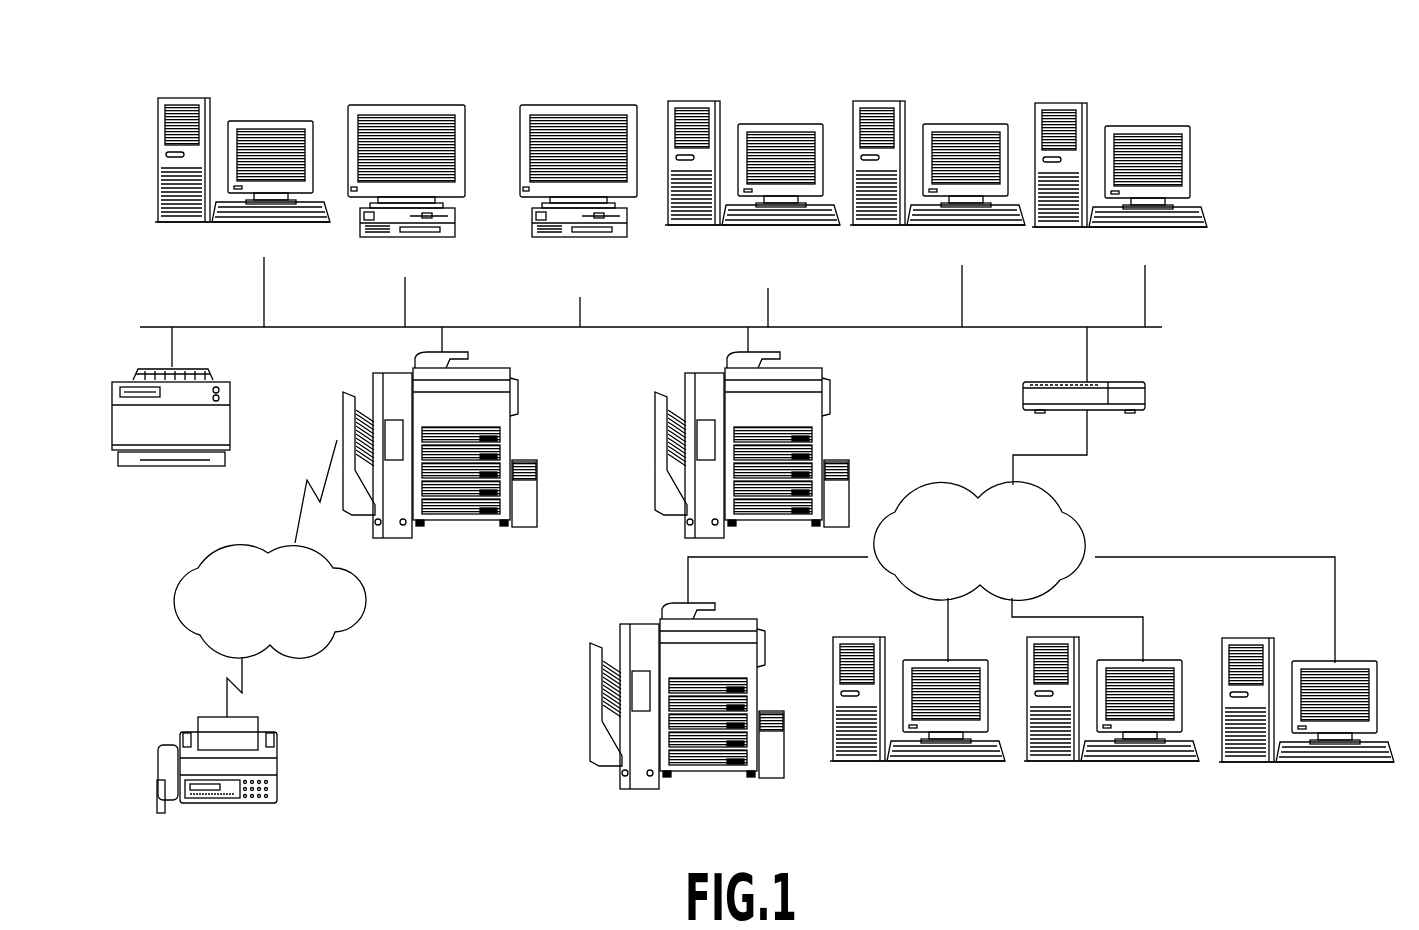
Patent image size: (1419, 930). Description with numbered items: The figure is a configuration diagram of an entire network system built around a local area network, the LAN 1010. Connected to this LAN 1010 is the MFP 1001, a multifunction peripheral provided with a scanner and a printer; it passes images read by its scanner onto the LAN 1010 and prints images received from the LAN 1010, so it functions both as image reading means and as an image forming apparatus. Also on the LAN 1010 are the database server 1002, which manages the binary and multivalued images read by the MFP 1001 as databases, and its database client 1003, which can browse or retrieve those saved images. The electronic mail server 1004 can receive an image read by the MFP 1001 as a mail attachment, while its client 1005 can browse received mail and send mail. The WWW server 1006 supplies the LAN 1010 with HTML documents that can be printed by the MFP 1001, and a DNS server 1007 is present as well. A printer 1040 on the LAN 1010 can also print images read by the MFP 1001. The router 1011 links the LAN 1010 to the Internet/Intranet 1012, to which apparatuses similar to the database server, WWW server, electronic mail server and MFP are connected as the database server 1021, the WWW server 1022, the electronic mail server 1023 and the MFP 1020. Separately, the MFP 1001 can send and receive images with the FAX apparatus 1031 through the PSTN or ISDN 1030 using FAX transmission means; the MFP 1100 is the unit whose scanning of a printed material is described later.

The MFP 1001 is at (510, 428).
The database server 1002 is at (250, 127).
The database client 1003 is at (402, 110).
The electronic mail server 1004 is at (778, 127).
The client of the electronic mail server 1005 is at (572, 110).
The WWW server 1006 is at (965, 128).
The DNS server 1007 is at (1148, 128).
The LAN 1010 is at (1123, 329).
The router 1011 is at (1145, 405).
The Internet/Intranet 1012 is at (1093, 527).
The MFP 1020 is at (597, 695).
The database server 1021 is at (875, 760).
The WWW server 1022 is at (1055, 762).
The electronic mail server 1023 is at (1232, 760).
The PSTN and ISDN 1030 is at (173, 605).
The FAX apparatus 1031 is at (277, 770).
The printer 1040 is at (223, 421).
The MFP 1100 is at (824, 428).